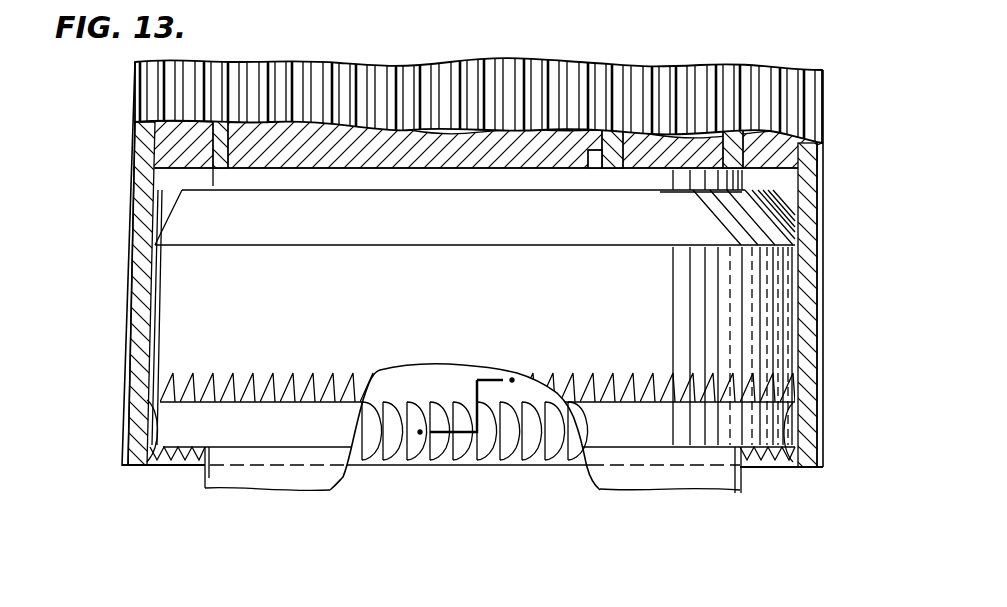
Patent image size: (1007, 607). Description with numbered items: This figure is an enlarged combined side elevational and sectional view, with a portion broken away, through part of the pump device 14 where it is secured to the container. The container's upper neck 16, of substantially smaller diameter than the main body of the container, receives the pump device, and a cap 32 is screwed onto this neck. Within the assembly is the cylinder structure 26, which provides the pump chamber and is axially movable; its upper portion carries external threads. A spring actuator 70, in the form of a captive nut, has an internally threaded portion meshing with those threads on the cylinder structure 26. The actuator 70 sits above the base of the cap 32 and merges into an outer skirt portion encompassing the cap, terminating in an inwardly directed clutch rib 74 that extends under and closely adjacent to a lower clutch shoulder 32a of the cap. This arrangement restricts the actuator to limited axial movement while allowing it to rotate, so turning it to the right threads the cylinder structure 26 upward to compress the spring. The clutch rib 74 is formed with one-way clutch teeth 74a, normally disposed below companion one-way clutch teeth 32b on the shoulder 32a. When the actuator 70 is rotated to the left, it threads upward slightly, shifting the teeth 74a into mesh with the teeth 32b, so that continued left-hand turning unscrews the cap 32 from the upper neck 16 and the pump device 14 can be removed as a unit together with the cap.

The pump device 14 is at (63, 432).
The upper neck 16 is at (222, 478).
The cylinder structure 26 is at (554, 126).
The cap 32 is at (138, 269).
The lower clutch shoulder 32a is at (273, 402).
The cap clutch teeth 32b is at (740, 390).
The spring actuator 70 is at (824, 100).
The clutch rib 74 is at (132, 446).
The actuator clutch teeth 74a is at (553, 441).